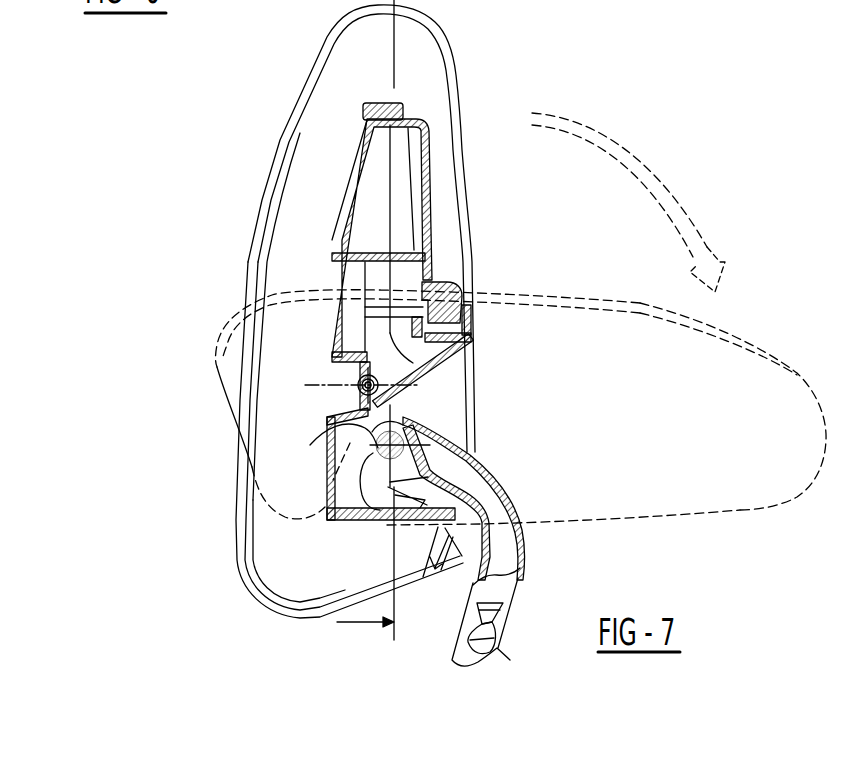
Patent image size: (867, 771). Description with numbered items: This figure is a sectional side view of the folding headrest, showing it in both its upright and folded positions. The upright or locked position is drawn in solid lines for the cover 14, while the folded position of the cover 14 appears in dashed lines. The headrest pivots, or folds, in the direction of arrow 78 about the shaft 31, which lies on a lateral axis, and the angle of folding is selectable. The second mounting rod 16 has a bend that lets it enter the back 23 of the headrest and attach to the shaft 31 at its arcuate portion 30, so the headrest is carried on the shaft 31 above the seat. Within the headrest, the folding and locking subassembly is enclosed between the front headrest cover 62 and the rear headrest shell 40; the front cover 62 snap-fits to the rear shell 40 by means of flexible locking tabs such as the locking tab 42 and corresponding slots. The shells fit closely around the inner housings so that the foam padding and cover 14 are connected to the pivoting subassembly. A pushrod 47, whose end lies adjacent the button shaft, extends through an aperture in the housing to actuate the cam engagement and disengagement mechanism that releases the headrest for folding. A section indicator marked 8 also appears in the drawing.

The cover 14 is at (268, 158).
The back of the headrest 23 is at (468, 78).
The flexible locking tab 42 is at (374, 102).
The rear headrest shell 40 is at (438, 168).
The front headrest cover 62 is at (343, 192).
The pushrod 47 is at (400, 386).
The arcuate portion 30 is at (330, 428).
The shaft 31 is at (374, 522).
The second mounting rod 16 is at (528, 561).
The arrow 78 is at (653, 167).
The section line 8 is at (453, 659).